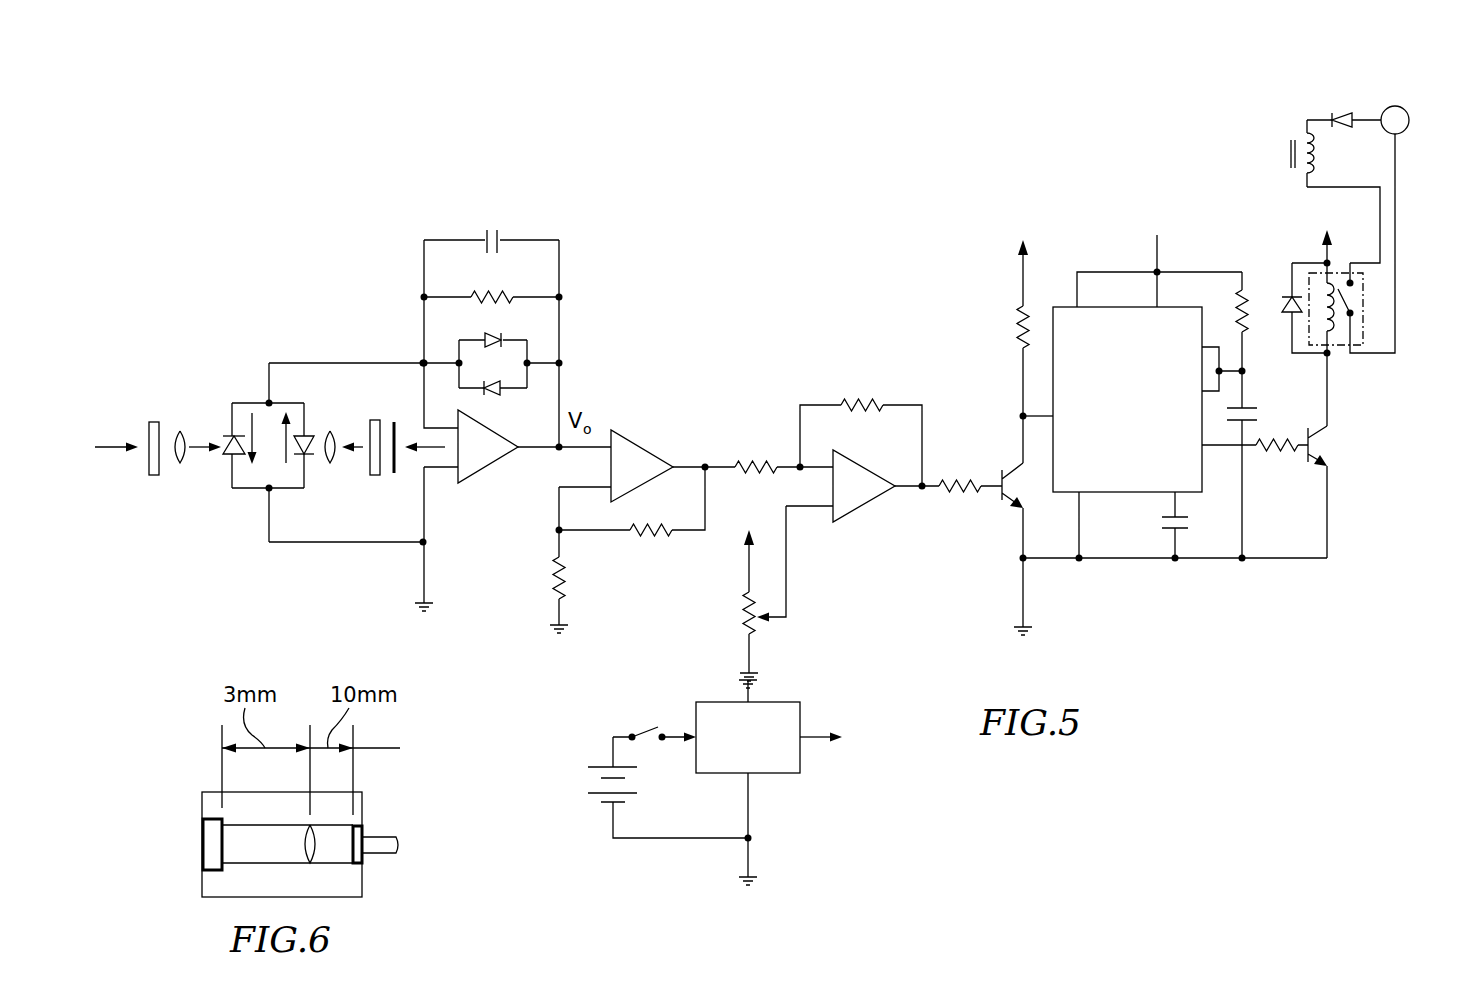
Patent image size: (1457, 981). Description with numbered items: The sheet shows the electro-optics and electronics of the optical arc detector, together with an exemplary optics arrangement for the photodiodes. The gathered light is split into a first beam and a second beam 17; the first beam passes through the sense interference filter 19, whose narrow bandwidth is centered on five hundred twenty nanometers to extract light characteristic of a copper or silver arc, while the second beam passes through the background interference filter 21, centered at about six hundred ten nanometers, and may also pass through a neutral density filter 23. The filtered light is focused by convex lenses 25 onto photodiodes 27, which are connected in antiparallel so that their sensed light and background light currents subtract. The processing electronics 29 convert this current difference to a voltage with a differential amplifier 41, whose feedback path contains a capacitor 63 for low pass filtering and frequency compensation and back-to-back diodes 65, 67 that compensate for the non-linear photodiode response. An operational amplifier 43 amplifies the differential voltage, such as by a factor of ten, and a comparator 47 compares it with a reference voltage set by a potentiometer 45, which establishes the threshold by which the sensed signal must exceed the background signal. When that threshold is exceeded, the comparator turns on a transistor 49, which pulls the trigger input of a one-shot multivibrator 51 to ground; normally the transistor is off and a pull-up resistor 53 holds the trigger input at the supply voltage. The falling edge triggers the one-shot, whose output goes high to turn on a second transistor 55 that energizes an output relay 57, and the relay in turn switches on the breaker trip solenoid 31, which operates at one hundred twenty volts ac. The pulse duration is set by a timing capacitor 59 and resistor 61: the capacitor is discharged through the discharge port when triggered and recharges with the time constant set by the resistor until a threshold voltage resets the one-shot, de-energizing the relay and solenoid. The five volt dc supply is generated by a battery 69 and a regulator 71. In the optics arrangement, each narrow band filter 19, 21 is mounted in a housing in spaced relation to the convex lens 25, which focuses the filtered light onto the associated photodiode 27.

In FIG. 5, the light beam 17 is at (428, 462).
In FIG. 5, the sense interference filter 19 is at (150, 422).
In FIG. 6, the sense interference filter 19 is at (178, 831).
In FIG. 5, the background interference filter 21 is at (374, 420).
In FIG. 6, the background interference filter 21 is at (208, 841).
In FIG. 5, the neutral density filter 23 is at (396, 436).
In FIG. 5, the convex lens 25 is at (330, 432).
In FIG. 6, the convex lens 25 is at (306, 836).
In FIG. 5, the photodiode 27 is at (290, 350).
In FIG. 6, the photodiode 27 is at (365, 834).
In FIG. 5, the electronics 29 is at (839, 292).
In FIG. 5, the breaker trip solenoid 31 is at (1306, 186).
In FIG. 5, the differential amplifier 41 is at (468, 480).
In FIG. 5, the operational amplifier 43 is at (646, 446).
In FIG. 5, the potentiometer 45 is at (740, 617).
In FIG. 5, the comparator 47 is at (860, 466).
In FIG. 5, the transistor 49 is at (1000, 474).
In FIG. 5, the one-shot multivibrator 51 is at (1064, 305).
In FIG. 5, the pull-up resistor 53 is at (1013, 328).
In FIG. 5, the second transistor 55 is at (1300, 438).
In FIG. 5, the output relay 57 is at (1342, 368).
In FIG. 5, the timing capacitor 59 is at (1256, 414).
In FIG. 5, the resistor 61 is at (1250, 304).
In FIG. 5, the capacitor 63 is at (500, 236).
In FIG. 5, the diode 65 is at (499, 336).
In FIG. 5, the diode 67 is at (503, 396).
In FIG. 5, the battery 69 is at (594, 778).
In FIG. 5, the regulator 71 is at (788, 702).